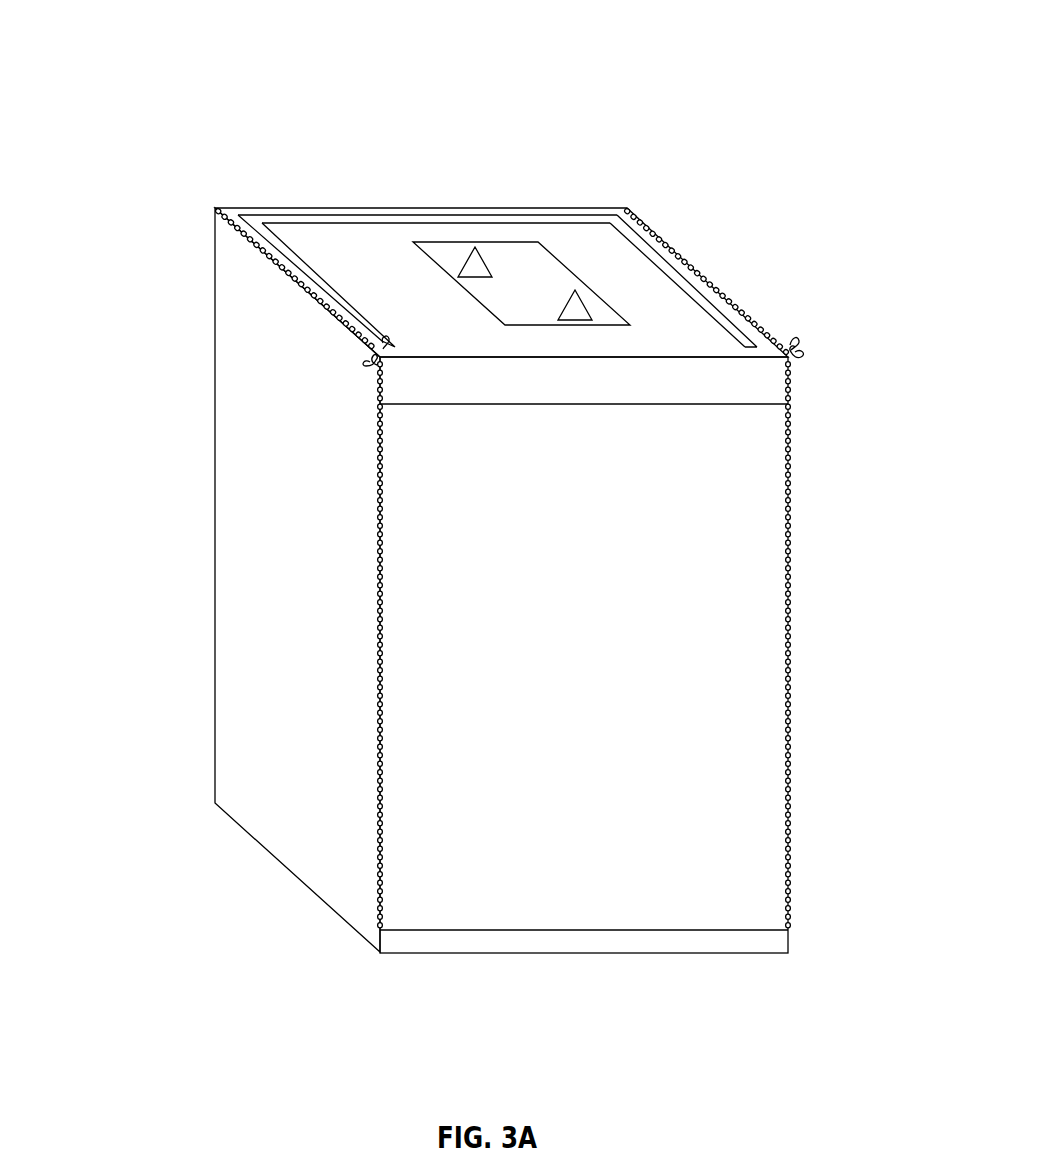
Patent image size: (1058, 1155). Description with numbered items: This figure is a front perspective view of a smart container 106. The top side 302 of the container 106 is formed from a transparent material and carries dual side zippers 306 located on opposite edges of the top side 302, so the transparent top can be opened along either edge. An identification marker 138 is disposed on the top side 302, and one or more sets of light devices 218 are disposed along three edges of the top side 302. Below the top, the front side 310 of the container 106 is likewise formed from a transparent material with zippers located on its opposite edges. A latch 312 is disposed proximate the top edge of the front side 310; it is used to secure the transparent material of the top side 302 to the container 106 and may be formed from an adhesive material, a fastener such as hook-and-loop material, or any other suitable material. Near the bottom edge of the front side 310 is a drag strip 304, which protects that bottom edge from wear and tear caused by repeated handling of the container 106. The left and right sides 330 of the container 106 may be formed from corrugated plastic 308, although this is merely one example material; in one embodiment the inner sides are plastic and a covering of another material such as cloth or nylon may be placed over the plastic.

The container 106 is at (548, 38).
The identification marker 138 is at (428, 240).
The light devices 218 is at (265, 237).
The top side 302 is at (590, 242).
The drag strip 304 is at (582, 962).
The dual side zippers 306 is at (740, 296).
The corrugated plastic 308 is at (248, 643).
The front side 310 is at (750, 537).
The latch 312 is at (577, 410).
The sides 330 is at (240, 558).